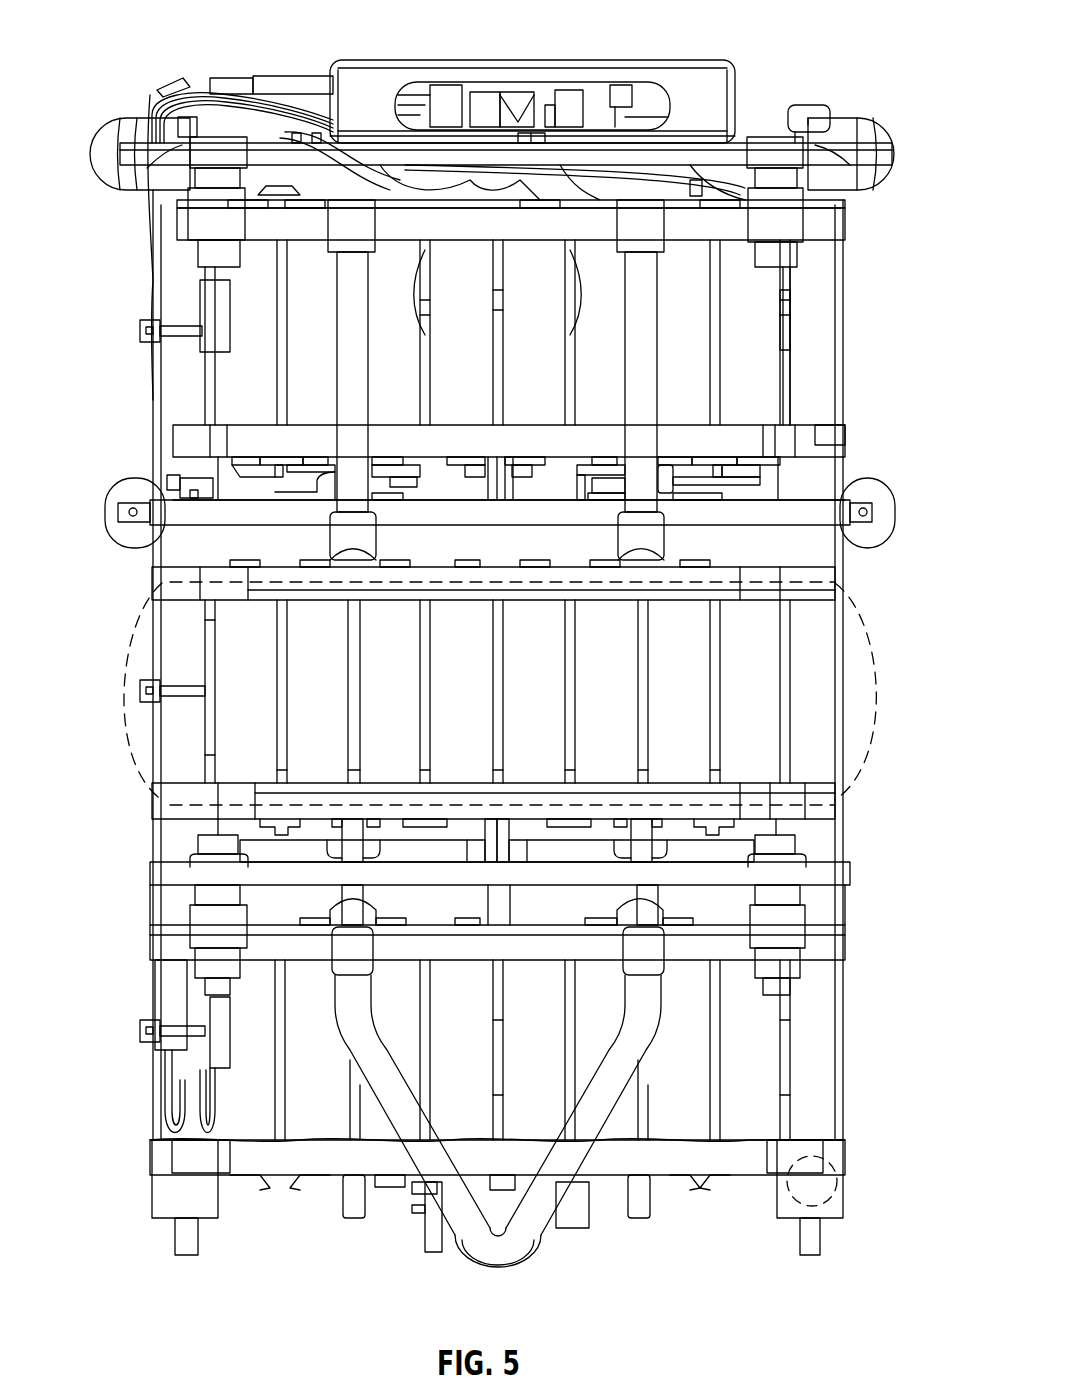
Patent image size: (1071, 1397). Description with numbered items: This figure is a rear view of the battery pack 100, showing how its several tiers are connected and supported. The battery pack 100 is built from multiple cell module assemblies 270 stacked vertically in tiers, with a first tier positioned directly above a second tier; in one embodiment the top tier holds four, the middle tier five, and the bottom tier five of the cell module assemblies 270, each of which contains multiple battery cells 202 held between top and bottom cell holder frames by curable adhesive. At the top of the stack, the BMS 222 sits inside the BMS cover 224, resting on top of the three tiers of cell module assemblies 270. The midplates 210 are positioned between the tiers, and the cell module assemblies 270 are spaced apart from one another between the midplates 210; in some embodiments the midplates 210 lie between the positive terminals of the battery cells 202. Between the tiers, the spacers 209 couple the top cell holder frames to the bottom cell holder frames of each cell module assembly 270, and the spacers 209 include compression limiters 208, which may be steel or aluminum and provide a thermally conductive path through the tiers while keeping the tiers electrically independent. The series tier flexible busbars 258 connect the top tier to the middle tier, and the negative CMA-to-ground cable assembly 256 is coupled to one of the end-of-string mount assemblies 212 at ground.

The battery pack 100 is at (515, 642).
The BMS 222 is at (508, 90).
The BMS cover 224 is at (686, 80).
The series tier flexible busbars 258 is at (343, 373).
The midplates 210 is at (873, 512).
The battery cells 202 is at (752, 680).
The spacers 209 is at (818, 706).
The cell module assemblies 270 is at (845, 757).
The end-of-string mount assemblies 212 is at (787, 923).
The compression limiters 208 is at (815, 1177).
The negative CMA-to-ground cable assembly 256 is at (555, 1165).